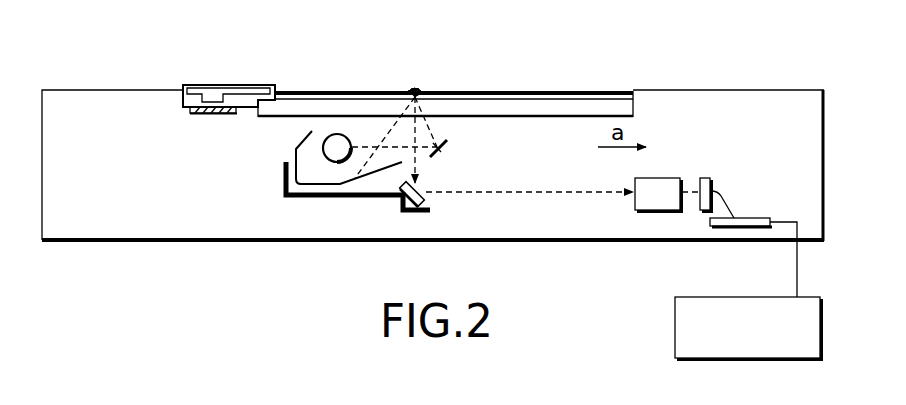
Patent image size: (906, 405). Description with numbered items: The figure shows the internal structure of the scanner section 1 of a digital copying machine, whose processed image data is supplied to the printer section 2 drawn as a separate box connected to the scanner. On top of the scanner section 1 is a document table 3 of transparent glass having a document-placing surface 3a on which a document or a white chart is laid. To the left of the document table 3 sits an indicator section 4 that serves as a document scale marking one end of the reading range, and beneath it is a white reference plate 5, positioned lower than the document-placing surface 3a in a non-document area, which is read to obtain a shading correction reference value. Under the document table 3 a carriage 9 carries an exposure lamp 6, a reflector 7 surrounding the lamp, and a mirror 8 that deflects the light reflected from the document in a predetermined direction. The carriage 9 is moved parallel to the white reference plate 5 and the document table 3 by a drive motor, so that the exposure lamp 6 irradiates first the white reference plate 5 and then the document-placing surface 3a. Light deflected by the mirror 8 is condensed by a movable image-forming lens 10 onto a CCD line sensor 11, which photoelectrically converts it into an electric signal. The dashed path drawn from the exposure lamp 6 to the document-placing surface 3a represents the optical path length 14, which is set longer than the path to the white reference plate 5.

The scanner section 1 is at (136, 254).
The printer section 2 is at (702, 349).
The document table 3 is at (526, 118).
The document-placing surface 3a is at (572, 100).
The indicator section 4 is at (212, 92).
The white reference plate 5 is at (207, 114).
The exposure lamp 6 is at (331, 152).
The reflector 7 is at (302, 136).
The mirror 8 is at (425, 202).
The carriage 9 is at (302, 198).
The image-forming lens 10 is at (667, 178).
The CCD line sensor 11 is at (706, 178).
The optical path length 14 is at (392, 132).